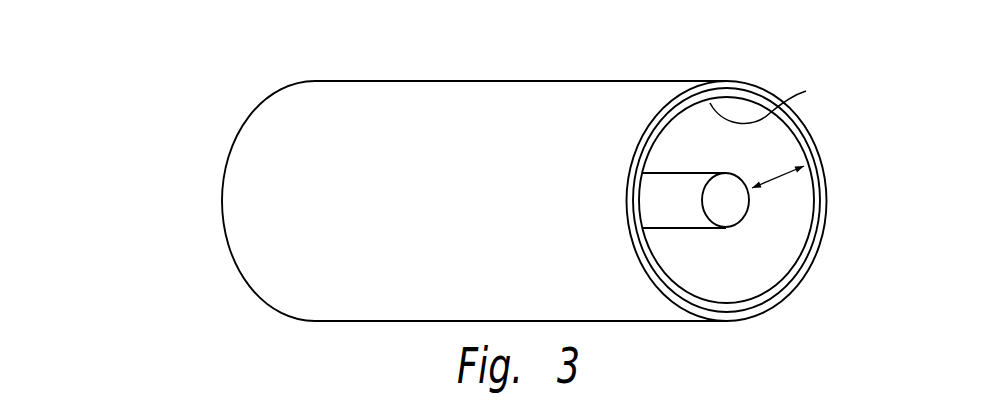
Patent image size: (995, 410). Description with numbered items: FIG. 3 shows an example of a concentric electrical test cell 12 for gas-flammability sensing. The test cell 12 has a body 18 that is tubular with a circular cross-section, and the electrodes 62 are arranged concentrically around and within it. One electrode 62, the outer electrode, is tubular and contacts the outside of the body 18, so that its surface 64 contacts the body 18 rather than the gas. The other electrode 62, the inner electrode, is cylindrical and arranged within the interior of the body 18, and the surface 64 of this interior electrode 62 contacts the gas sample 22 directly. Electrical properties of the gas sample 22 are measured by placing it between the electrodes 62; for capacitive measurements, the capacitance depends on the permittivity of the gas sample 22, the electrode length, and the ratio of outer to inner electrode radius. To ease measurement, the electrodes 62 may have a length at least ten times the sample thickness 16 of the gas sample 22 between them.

The test cell 12 is at (756, 48).
The sample thickness 16 is at (787, 178).
The body 18 is at (729, 200).
The gas sample 22 is at (775, 235).
The electrodes 62 is at (715, 168).
The surface 64 is at (678, 173).